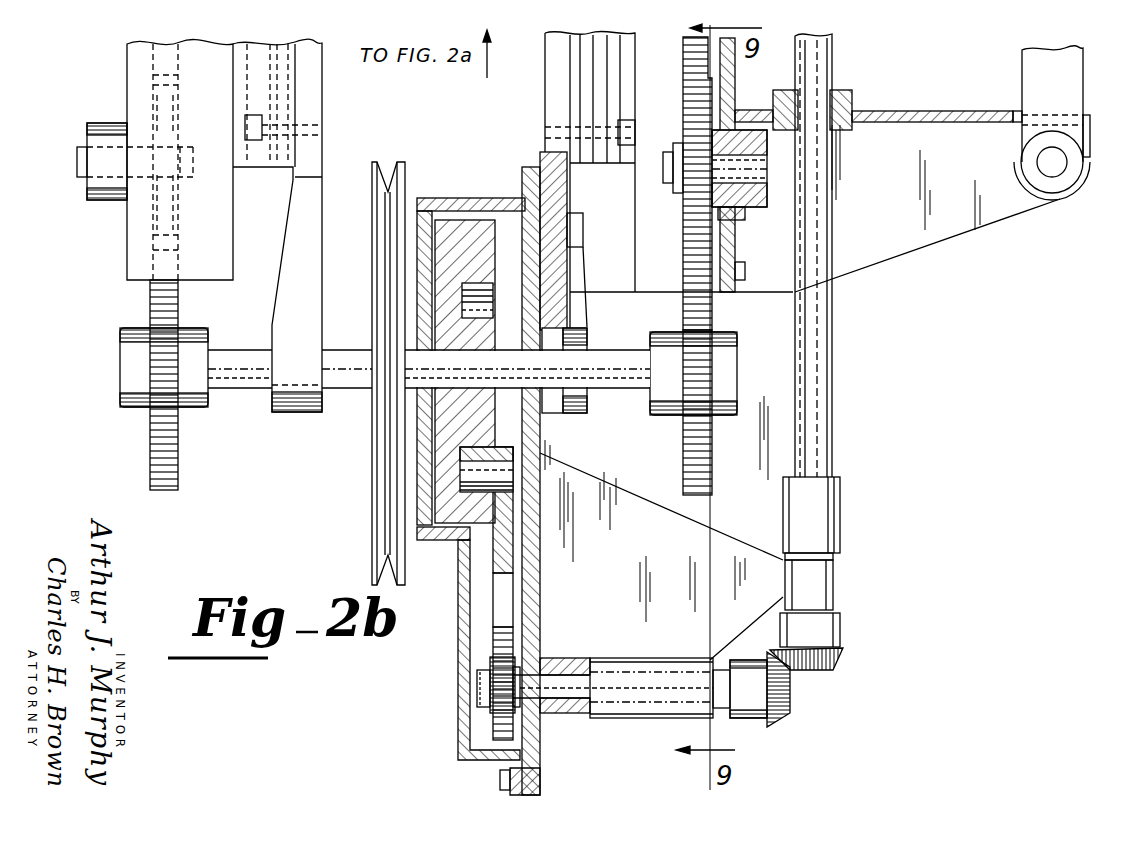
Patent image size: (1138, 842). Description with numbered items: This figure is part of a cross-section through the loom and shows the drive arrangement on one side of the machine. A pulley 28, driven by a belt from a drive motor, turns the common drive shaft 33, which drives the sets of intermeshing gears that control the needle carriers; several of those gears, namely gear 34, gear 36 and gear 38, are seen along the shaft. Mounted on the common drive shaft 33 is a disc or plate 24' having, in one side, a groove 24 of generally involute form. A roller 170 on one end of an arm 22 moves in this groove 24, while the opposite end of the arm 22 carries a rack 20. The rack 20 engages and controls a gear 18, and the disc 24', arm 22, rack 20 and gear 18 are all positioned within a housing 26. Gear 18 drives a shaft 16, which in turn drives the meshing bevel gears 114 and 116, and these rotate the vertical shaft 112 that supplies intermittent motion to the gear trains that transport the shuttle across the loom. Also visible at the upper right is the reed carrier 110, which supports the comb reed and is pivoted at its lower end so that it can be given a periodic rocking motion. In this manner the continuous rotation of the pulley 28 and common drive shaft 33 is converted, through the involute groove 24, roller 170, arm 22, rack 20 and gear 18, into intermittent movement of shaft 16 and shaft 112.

The shaft 16 is at (580, 700).
The gear 18 is at (490, 665).
The rack 20 is at (492, 727).
The arm 22 is at (498, 560).
The groove 24 is at (493, 309).
The disc 24' is at (476, 381).
The housing 26 is at (487, 206).
The pulley 28 is at (397, 164).
The common drive shaft 33 is at (236, 372).
The gear 34 is at (692, 62).
The gear 36 is at (692, 223).
The gear 38 is at (172, 465).
The reed carrier 110 is at (1075, 82).
The shaft 112 is at (815, 360).
The bevel gear 114 is at (790, 700).
The bevel gear 116 is at (843, 656).
The roller 170 is at (476, 466).